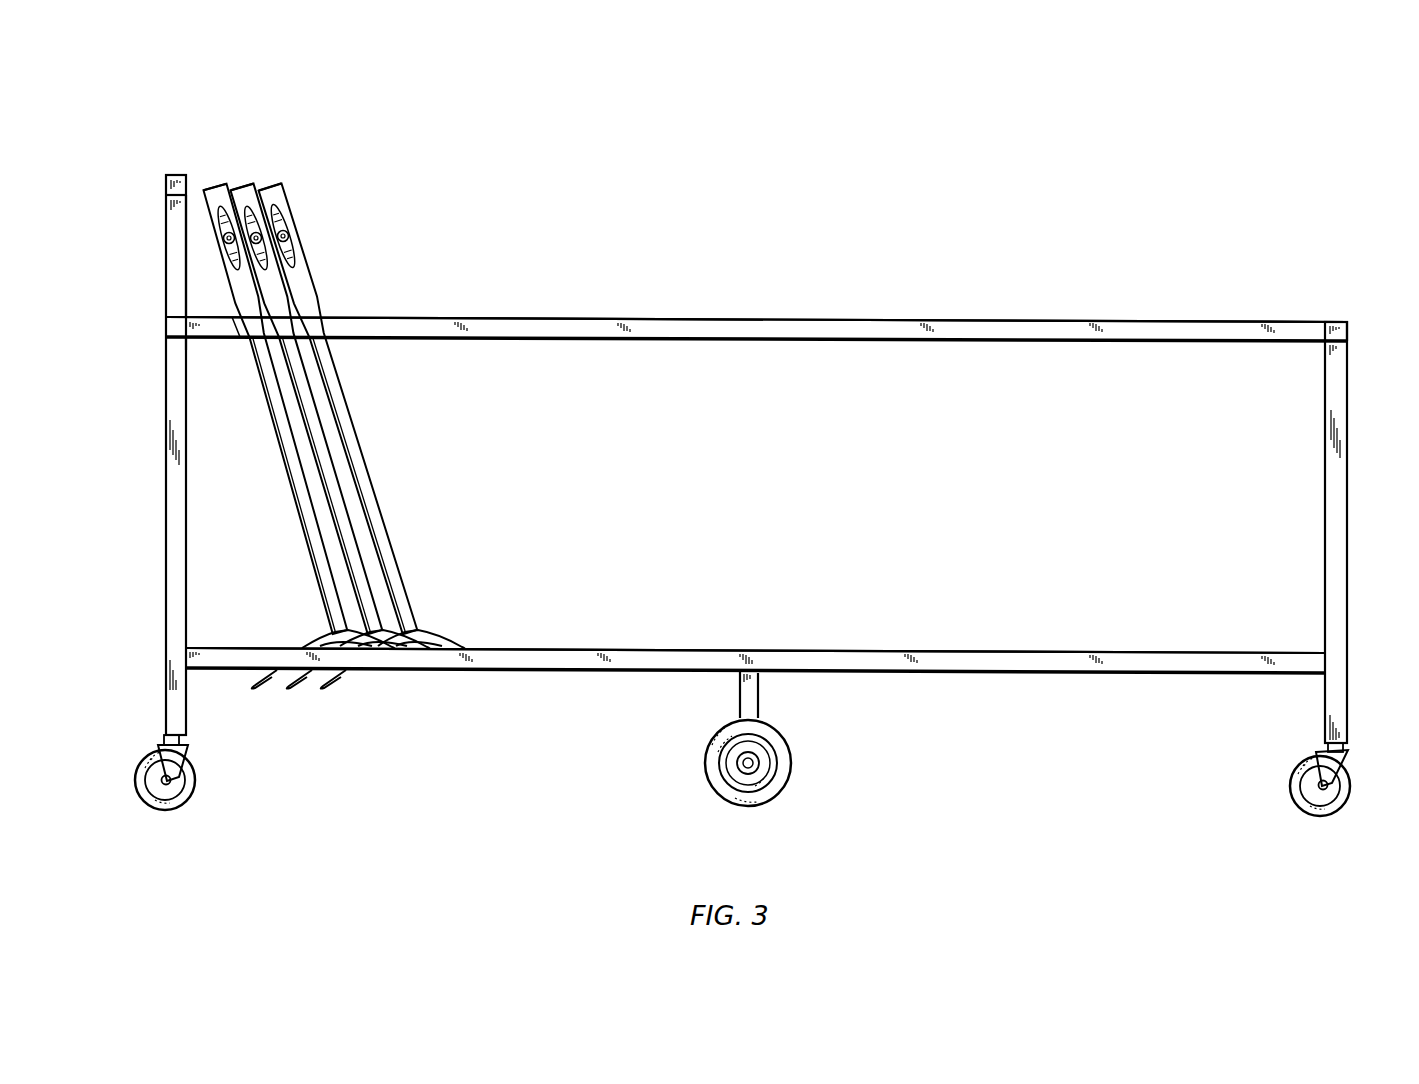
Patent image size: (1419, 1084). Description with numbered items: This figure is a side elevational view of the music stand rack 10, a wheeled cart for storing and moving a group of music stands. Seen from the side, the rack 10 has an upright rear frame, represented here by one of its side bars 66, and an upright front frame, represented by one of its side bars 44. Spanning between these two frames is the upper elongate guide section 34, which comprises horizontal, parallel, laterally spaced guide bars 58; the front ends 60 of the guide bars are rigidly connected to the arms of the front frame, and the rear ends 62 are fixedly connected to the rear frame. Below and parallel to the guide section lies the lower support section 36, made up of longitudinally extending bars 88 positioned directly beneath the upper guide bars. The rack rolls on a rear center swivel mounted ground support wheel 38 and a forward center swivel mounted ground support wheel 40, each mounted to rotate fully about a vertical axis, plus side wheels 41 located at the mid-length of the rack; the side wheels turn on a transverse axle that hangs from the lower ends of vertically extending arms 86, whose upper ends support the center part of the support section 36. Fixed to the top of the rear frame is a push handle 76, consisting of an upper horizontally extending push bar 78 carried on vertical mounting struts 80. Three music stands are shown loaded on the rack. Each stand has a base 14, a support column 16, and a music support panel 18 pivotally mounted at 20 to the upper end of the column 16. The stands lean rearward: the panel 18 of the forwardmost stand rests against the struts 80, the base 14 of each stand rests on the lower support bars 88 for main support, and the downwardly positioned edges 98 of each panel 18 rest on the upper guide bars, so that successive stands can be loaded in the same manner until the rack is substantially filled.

The music stand rack 10 is at (1080, 262).
The base 14 is at (440, 633).
The support column 16 is at (352, 455).
The music support panel 18 is at (260, 195).
The pivot mounting 20 is at (285, 238).
The upper elongate guide section 34 is at (855, 316).
The lower support section 36 is at (962, 648).
The rear center swivel mounted ground support wheel 38 is at (183, 805).
The forward center swivel mounted ground support wheel 40 is at (1335, 805).
The side wheel 41 is at (773, 797).
The side bar 44 is at (1338, 488).
The elongate guide bar 58 is at (753, 332).
The front end of guide bar 60 is at (1323, 330).
The rear end of guide bar 62 is at (193, 347).
The side bar 66 is at (173, 563).
The push handle 76 is at (163, 168).
The push bar 78 is at (176, 175).
The vertical mounting strut 80 is at (175, 258).
The vertically extending arm 86 is at (752, 697).
The longitudinally extending bar 88 is at (700, 660).
The downwardly positioned edge 98 is at (237, 314).